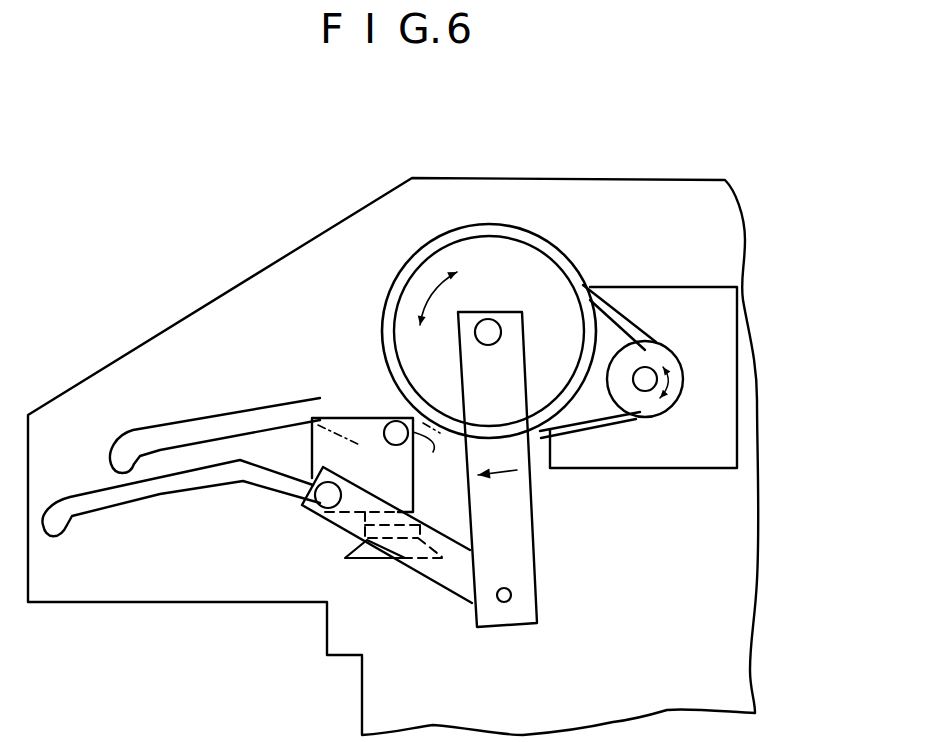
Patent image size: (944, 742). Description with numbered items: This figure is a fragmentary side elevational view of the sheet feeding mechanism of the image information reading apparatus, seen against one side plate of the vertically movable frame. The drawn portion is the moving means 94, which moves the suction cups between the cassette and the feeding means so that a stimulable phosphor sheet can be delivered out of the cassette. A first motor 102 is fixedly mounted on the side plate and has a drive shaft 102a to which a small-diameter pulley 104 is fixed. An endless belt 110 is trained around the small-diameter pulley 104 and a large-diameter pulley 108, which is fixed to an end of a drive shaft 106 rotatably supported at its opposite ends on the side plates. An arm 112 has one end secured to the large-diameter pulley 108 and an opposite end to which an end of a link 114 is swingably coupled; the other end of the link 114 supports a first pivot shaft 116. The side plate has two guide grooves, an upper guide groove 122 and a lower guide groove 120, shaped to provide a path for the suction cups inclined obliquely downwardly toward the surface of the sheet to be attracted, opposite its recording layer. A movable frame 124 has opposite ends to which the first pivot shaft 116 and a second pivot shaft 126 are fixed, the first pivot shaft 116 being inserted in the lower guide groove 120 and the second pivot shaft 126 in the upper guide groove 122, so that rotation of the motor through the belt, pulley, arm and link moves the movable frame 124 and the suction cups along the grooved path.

The moving means 94 is at (530, 275).
The large-diameter pulley 108 is at (478, 258).
The endless belt 110 is at (628, 315).
The drive shaft 106 is at (490, 322).
The first motor 102 is at (727, 335).
The small-diameter pulley 104 is at (684, 385).
The drive shaft 102a is at (646, 380).
The arm 112 is at (533, 517).
The link 114 is at (458, 580).
The first pivot shaft 116 is at (316, 505).
The movable frame 124 is at (321, 442).
The second pivot shaft 126 is at (393, 420).
The guide groove 122 is at (177, 430).
The guide groove 120 is at (118, 497).